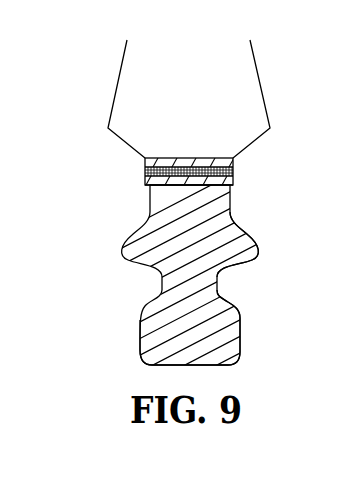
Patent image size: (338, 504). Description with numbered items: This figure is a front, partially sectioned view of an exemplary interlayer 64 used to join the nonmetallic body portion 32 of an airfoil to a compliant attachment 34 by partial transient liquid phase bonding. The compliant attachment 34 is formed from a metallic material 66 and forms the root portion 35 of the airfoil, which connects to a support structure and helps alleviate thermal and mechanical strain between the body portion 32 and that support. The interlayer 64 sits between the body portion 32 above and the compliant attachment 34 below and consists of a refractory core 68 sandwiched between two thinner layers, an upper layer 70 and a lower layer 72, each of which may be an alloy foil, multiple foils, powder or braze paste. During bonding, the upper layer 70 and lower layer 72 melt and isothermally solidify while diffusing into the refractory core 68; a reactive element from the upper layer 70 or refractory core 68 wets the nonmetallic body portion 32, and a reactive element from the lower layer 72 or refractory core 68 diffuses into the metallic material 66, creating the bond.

The body portion 32 is at (232, 102).
The compliant attachment 34 is at (232, 224).
The root portion 35 is at (220, 262).
The interlayer 64 is at (174, 165).
The metallic material 66 is at (147, 233).
The refractory core 68 is at (145, 172).
The upper layer 70 is at (145, 162).
The lower layer 72 is at (145, 180).